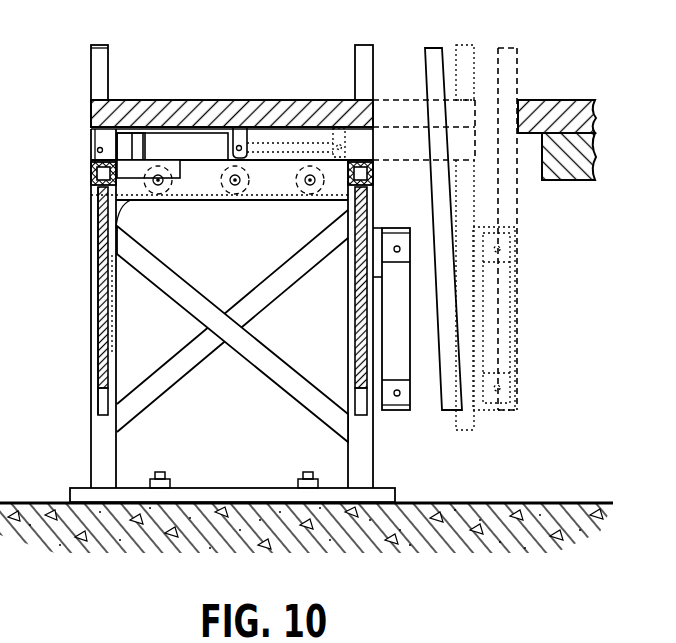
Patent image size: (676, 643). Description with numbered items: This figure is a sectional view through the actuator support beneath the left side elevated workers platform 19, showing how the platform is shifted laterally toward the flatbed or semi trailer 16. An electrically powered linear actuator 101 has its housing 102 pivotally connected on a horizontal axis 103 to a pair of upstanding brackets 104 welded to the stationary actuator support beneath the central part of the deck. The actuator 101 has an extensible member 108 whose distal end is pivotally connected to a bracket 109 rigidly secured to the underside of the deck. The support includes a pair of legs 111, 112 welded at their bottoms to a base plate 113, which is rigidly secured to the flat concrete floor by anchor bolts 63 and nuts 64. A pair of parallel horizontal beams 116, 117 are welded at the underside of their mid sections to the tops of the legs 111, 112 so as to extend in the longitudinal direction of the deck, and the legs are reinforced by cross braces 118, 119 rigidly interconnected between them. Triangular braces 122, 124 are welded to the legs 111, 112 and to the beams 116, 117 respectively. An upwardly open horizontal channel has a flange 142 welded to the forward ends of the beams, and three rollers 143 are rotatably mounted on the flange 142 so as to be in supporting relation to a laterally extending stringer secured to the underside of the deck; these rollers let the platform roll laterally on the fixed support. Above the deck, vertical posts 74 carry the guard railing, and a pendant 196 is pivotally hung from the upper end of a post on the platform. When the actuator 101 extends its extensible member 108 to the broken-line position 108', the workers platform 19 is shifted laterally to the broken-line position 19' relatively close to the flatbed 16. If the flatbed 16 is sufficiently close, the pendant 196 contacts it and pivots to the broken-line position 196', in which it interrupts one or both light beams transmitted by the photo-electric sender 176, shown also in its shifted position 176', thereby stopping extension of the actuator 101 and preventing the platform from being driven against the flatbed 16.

The flatbed or semi trailer 16 is at (568, 100).
The left side elongated elevated workers platform 19 is at (243, 67).
The workers platform shifted position 19' is at (424, 220).
The anchor bolts 63 is at (157, 471).
The nuts 64 is at (170, 480).
The vertical uprights or posts 74 is at (98, 77).
The electrically powered linear actuator 101 is at (200, 145).
The housing 102 is at (157, 140).
The horizontal axis 103 is at (100, 148).
The upstanding brackets 104 is at (92, 146).
The extensible member 108 is at (238, 114).
The extended position of extensible member 108' is at (328, 113).
The bracket 109 is at (247, 137).
The leg 111 is at (91, 362).
The leg 112 is at (375, 452).
The base plate 113 is at (398, 491).
The horizontal beam 116 is at (91, 186).
The horizontal beam 117 is at (347, 200).
The cross brace 118 is at (167, 292).
The cross brace 119 is at (188, 376).
The triangular brace 122 is at (98, 285).
The triangular brace 124 is at (352, 276).
The flange 142 is at (98, 240).
The rollers 143 is at (177, 197).
The sender or emitter 176 is at (357, 319).
The sender or emitter 176' is at (520, 318).
The pendant 196 is at (422, 210).
The pivoted position of pendant 196' is at (533, 229).